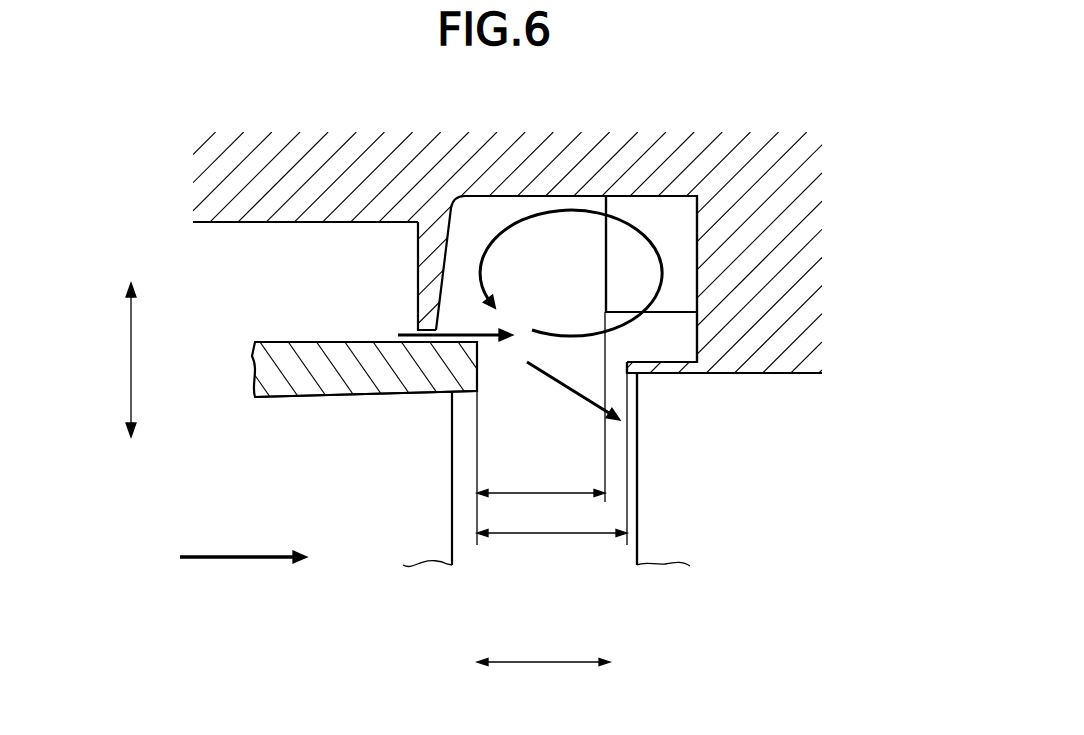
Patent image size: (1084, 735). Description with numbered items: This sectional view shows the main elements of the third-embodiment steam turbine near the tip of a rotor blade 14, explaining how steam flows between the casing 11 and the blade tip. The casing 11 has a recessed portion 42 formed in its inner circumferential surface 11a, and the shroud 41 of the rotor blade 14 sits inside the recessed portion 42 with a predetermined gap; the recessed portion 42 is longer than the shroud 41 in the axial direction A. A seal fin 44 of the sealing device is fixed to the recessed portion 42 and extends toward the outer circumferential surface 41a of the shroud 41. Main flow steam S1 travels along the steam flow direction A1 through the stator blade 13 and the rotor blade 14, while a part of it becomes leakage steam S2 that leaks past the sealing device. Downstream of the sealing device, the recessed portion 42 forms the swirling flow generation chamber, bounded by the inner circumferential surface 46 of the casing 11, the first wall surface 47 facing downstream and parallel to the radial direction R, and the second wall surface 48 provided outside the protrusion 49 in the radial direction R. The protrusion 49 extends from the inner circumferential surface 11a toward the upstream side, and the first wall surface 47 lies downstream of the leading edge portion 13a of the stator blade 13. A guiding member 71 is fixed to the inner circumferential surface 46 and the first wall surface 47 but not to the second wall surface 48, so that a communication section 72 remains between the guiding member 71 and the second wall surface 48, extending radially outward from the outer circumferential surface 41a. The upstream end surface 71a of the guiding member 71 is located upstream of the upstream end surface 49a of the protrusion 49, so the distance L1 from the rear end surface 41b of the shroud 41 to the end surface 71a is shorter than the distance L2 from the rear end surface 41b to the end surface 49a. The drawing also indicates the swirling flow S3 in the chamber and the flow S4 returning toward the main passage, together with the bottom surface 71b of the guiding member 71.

The casing 11 is at (576, 119).
The inner circumferential surface 11a is at (788, 373).
The stator blade 13 is at (678, 580).
The leading edge portion 13a is at (637, 551).
The rotor blade 14 is at (411, 580).
The shroud 41 is at (275, 372).
The outer circumferential surface 41a is at (290, 342).
The rear end surface 41b is at (477, 371).
The recessed portion 42 is at (278, 226).
The seal fin 44 is at (428, 296).
The inner circumferential surface 46 is at (512, 200).
The first wall surface 47 is at (697, 237).
The second wall surface 48 is at (665, 362).
The protrusion 49 is at (638, 362).
The upstream end surface 49a is at (628, 372).
The guiding member 71 is at (672, 184).
The end surface 71a is at (598, 214).
The recess bottom surface 71b is at (680, 312).
The communication section 72 is at (647, 328).
The main flow steam S1 is at (239, 560).
The leakage steam S2 is at (398, 336).
The vortex flow S3 is at (512, 196).
The return flow S4 is at (560, 386).
The steam flow direction A1 is at (243, 546).
The radial direction R is at (122, 360).
The distance L1 is at (541, 428).
The distance L2 is at (552, 459).
The axial direction A is at (543, 650).